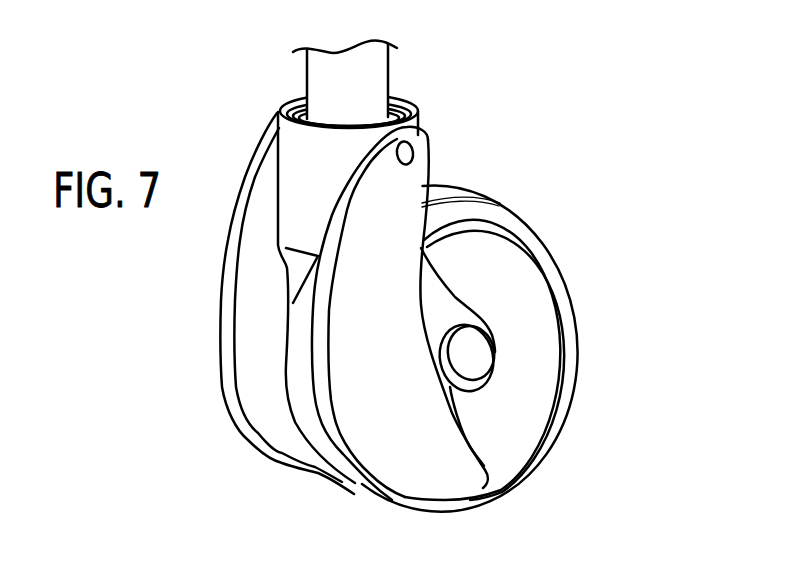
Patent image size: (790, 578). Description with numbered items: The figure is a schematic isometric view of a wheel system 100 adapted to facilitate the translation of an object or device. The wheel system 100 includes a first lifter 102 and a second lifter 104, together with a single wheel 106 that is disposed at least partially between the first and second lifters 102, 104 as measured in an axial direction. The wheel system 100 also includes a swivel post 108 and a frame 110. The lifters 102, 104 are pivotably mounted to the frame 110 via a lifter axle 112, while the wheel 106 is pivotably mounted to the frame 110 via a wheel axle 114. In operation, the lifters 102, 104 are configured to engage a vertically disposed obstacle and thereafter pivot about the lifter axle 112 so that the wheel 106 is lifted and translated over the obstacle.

The wheel system 100 is at (401, 301).
The first lifter 102 is at (248, 300).
The second lifter 104 is at (418, 468).
The wheel 106 is at (305, 425).
The swivel post 108 is at (323, 79).
The frame 110 is at (298, 161).
The lifter axle 112 is at (413, 155).
The wheel axle 114 is at (472, 357).